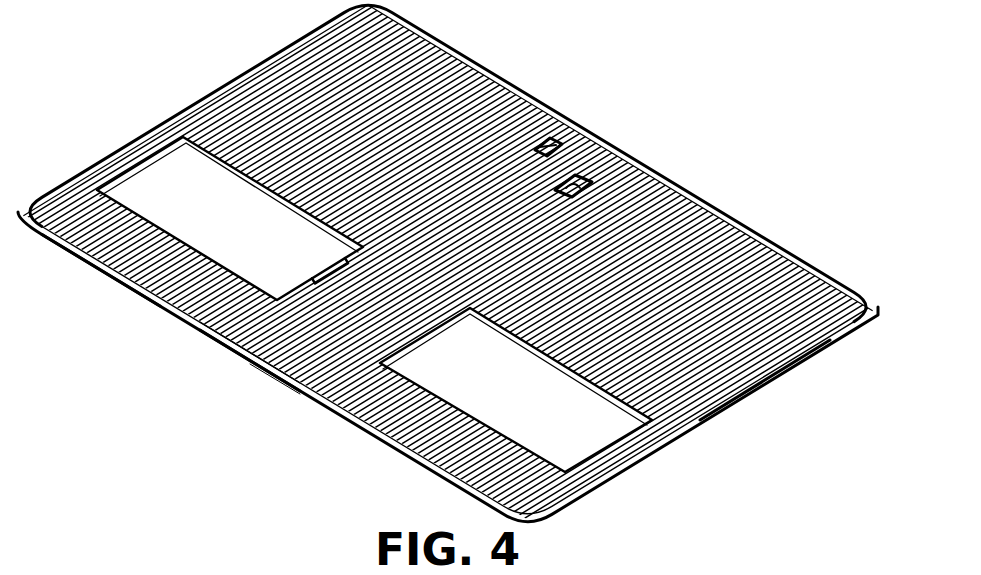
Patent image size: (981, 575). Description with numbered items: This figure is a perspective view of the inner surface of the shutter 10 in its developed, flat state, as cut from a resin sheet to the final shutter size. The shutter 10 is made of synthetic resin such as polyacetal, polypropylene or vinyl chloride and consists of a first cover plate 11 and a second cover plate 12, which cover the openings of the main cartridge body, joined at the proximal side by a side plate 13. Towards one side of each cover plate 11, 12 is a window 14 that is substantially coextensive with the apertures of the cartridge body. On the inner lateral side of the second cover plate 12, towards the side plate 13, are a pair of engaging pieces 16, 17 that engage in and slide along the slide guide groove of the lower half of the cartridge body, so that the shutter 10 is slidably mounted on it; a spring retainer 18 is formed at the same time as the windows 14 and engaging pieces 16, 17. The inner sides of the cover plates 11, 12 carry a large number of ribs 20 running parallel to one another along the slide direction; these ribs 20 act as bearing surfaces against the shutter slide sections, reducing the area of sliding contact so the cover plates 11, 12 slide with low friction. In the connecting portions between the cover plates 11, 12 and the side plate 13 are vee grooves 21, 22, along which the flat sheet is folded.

The shutter 10 is at (86, 158).
The first cover plate 11 is at (800, 352).
The second cover plate 12 is at (88, 264).
The side plate 13 is at (266, 370).
The window 14 is at (189, 136).
The engaging piece 16 is at (552, 140).
The engaging piece 17 is at (328, 270).
The spring retainer 18 is at (598, 176).
The rib 20 is at (478, 72).
The vee groove 21 is at (272, 378).
The vee groove 22 is at (256, 362).